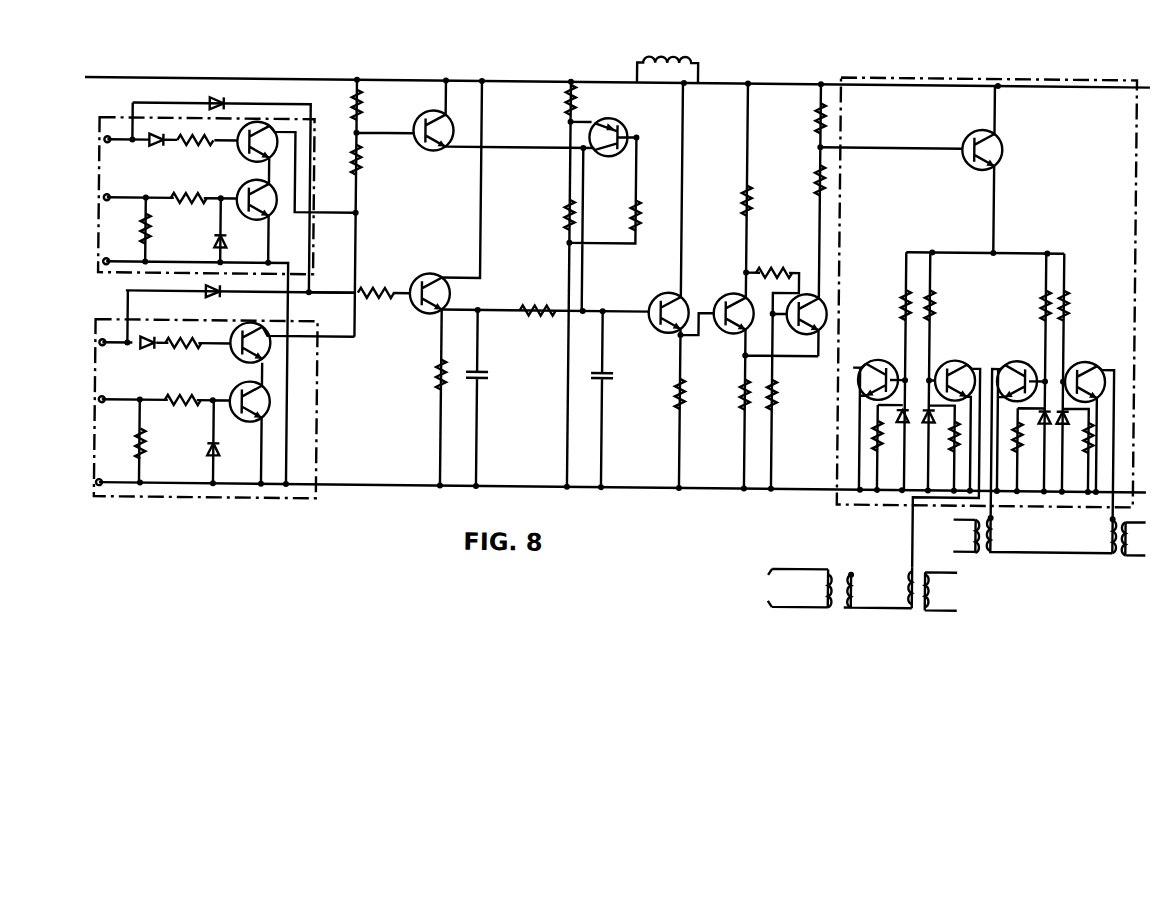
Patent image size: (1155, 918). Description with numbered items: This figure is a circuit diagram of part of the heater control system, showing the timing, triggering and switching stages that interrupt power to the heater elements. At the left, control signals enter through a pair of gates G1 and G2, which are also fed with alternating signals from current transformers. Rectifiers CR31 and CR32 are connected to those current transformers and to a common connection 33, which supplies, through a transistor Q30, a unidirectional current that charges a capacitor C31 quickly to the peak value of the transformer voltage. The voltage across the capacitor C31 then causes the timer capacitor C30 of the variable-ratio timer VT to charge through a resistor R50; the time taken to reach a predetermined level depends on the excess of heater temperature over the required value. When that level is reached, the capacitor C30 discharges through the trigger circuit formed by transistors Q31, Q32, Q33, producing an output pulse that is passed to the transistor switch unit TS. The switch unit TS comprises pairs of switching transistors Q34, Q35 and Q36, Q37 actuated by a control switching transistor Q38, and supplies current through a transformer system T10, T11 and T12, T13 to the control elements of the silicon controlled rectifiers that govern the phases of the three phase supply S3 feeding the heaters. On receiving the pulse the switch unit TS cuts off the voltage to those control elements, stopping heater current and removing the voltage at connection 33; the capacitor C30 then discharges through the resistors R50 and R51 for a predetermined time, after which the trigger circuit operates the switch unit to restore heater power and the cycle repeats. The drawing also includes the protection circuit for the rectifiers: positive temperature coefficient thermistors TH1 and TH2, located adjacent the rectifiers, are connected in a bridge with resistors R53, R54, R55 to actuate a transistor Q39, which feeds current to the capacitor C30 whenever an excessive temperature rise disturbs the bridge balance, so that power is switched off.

The rectifier CR31 is at (211, 103).
The gate G1 is at (296, 114).
The common connection 33 is at (335, 288).
The rectifier CR32 is at (214, 295).
The gate G2 is at (323, 378).
The transistor Q30 is at (426, 276).
The resistor R51 is at (434, 367).
The capacitor C31 is at (500, 363).
The resistor R50 is at (545, 291).
The variable-ratio timer circuit VT is at (604, 302).
The timer capacitor C30 is at (617, 371).
The resistor R53 is at (557, 101).
The resistor R54 is at (566, 206).
The resistor R55 is at (605, 224).
The transistor Q39 is at (613, 123).
The positive temperature coefficient thermistor TH1 is at (648, 56).
The positive temperature coefficient thermistor TH2 is at (686, 56).
The trigger circuit transistor Q31 is at (657, 294).
The trigger circuit transistor Q32 is at (721, 293).
The trigger circuit transistor Q33 is at (801, 286).
The transistor switch unit TS is at (883, 68).
The control switching transistor Q38 is at (1003, 141).
The switching transistor Q34 is at (876, 360).
The switching transistor Q35 is at (952, 360).
The switching transistor Q36 is at (1013, 360).
The switching transistor Q37 is at (1083, 360).
The transformer T10 is at (842, 565).
The three phase supply S3 is at (792, 588).
The transformer T12 is at (942, 581).
The transformer T11 is at (1000, 526).
The transformer T13 is at (1118, 545).